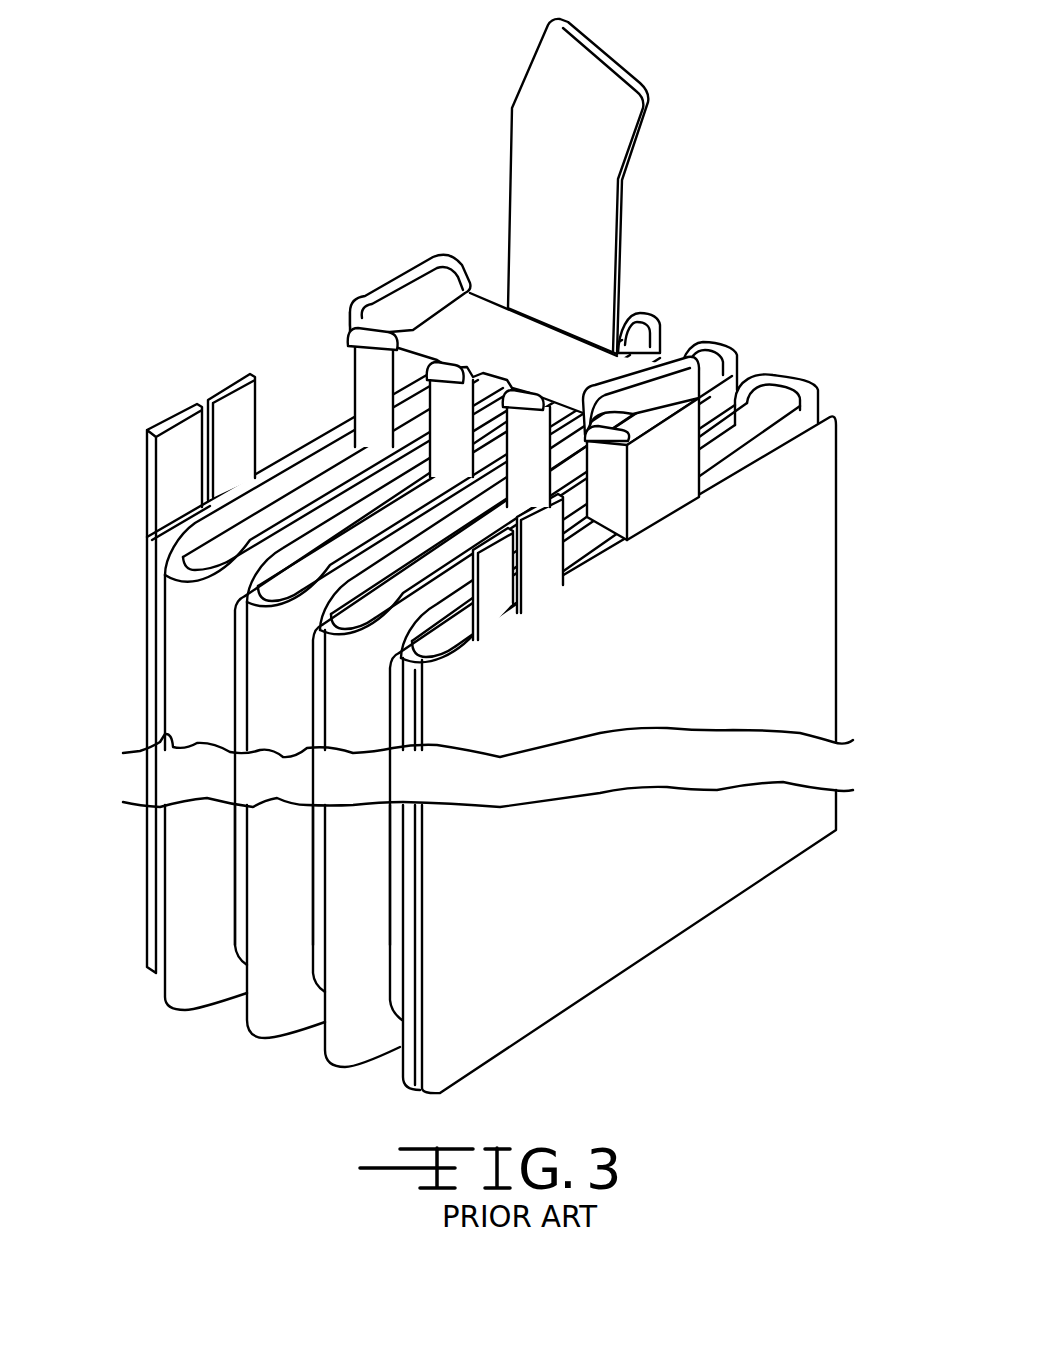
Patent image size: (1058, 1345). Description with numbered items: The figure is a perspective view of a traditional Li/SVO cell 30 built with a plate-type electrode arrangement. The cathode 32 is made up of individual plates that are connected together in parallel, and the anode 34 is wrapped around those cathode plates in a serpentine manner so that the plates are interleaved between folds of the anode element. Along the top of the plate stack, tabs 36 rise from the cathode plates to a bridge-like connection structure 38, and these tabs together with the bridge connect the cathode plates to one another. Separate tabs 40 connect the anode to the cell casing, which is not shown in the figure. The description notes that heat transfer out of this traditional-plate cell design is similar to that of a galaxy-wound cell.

The Li/SVO cell 30 is at (304, 278).
The cathode 32 is at (322, 470).
The anode 34 is at (250, 686).
The tabs 36 is at (397, 423).
The bridge-like connection structure 38 is at (514, 348).
The tabs 40 is at (182, 420).